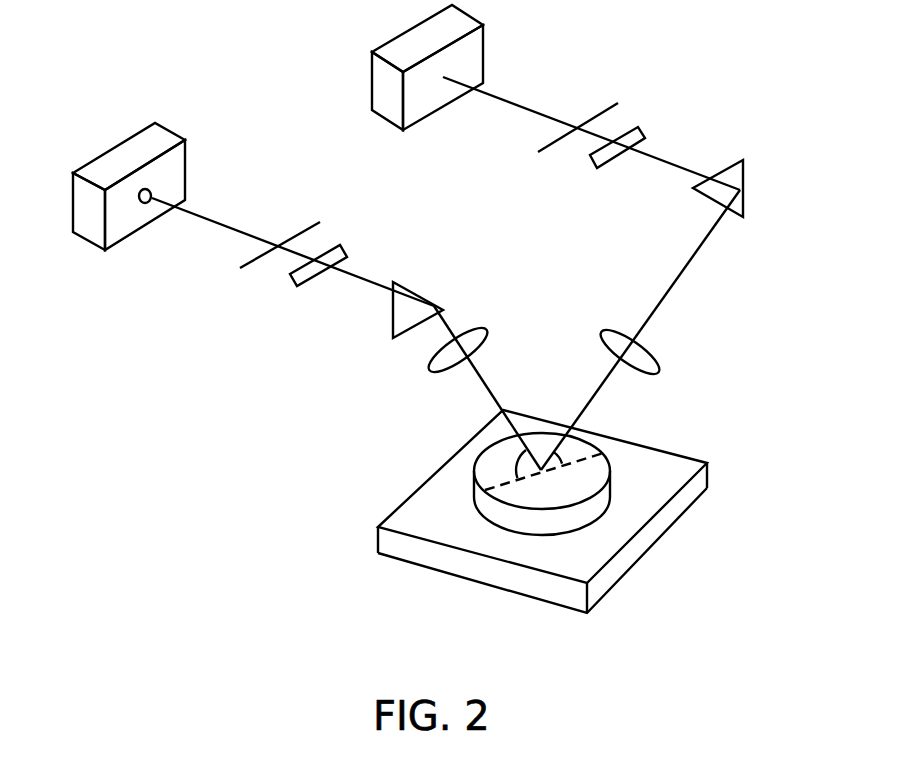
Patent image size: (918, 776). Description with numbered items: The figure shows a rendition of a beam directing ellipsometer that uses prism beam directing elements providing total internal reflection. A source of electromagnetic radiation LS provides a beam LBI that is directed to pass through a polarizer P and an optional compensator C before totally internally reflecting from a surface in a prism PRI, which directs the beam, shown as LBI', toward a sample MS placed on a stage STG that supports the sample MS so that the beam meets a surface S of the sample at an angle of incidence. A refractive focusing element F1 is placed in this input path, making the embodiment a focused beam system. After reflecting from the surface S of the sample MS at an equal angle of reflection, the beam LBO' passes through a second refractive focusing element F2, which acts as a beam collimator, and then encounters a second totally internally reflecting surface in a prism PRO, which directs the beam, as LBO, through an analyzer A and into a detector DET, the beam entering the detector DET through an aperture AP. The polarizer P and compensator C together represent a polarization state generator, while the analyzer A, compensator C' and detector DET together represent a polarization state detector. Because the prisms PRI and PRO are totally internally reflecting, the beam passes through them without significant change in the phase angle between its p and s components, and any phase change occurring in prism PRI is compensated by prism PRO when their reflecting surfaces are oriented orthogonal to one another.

The detector DET is at (113, 147).
The aperture AP is at (153, 203).
The output beam LBO is at (293, 277).
The analyzer A is at (300, 230).
The compensator C' is at (282, 284).
The prism PRO is at (435, 301).
The beam LBO' is at (454, 388).
The second refractive focusing element F2 is at (423, 376).
The source of electromagnetic radiation LS is at (370, 80).
The beam LBI is at (600, 133).
The polarizer P is at (598, 112).
The compensator C is at (582, 168).
The prism PRI is at (746, 188).
The refracted input light beam LBI' is at (640, 330).
The refractive focusing element F1 is at (660, 350).
The stage STG is at (483, 585).
The sample MS is at (600, 517).
The surface S is at (605, 460).